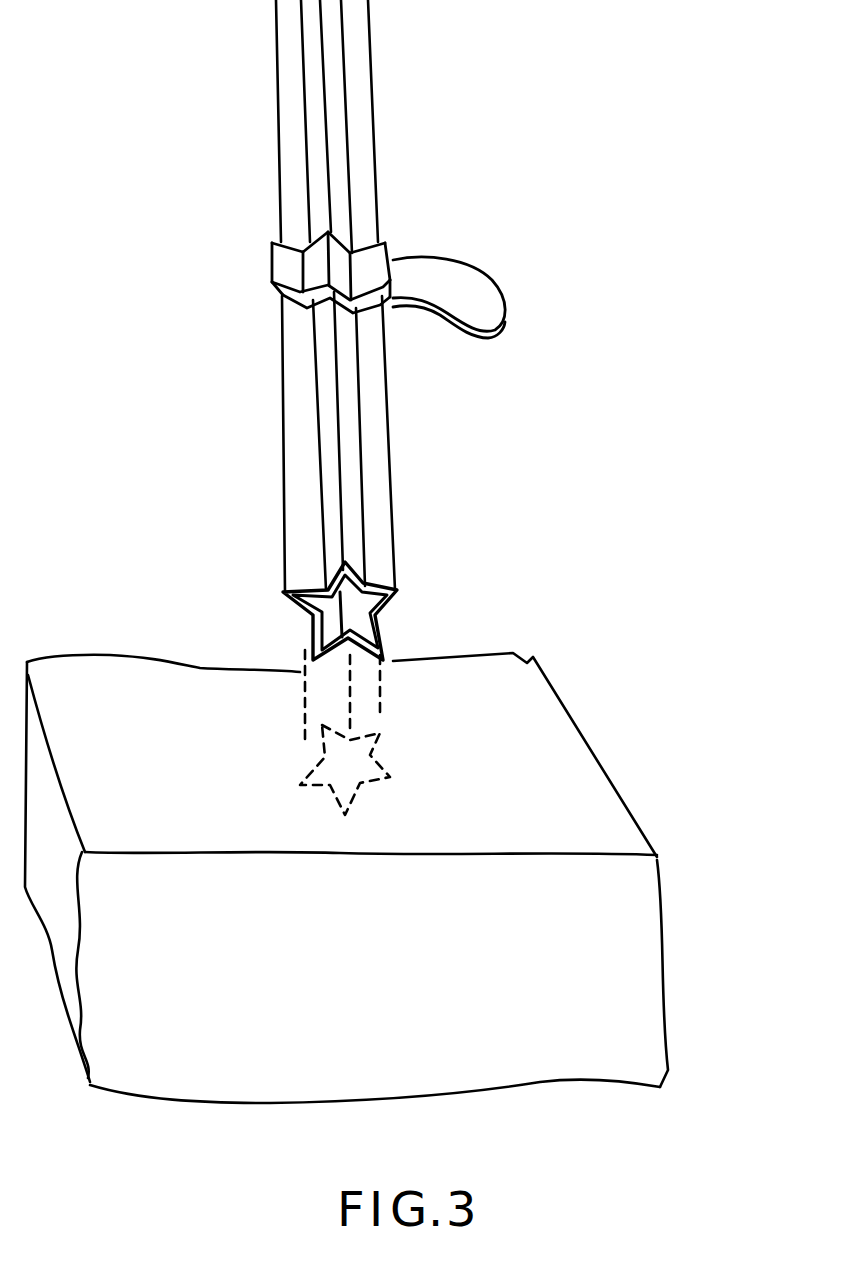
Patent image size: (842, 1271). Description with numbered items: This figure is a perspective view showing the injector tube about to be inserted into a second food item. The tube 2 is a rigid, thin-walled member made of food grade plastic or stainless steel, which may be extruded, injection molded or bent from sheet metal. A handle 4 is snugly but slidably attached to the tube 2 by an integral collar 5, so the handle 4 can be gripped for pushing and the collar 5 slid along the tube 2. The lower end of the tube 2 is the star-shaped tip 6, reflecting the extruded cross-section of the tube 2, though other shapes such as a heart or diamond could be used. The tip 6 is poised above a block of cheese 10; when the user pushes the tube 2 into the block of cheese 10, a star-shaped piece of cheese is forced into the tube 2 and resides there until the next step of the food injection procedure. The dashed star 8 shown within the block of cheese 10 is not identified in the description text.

The tube 2 is at (370, 483).
The handle 4 is at (467, 290).
The collar 5 is at (272, 262).
The tip 6 is at (380, 623).
The star-shaped impression 8 is at (393, 778).
The block of cheese 10 is at (607, 837).